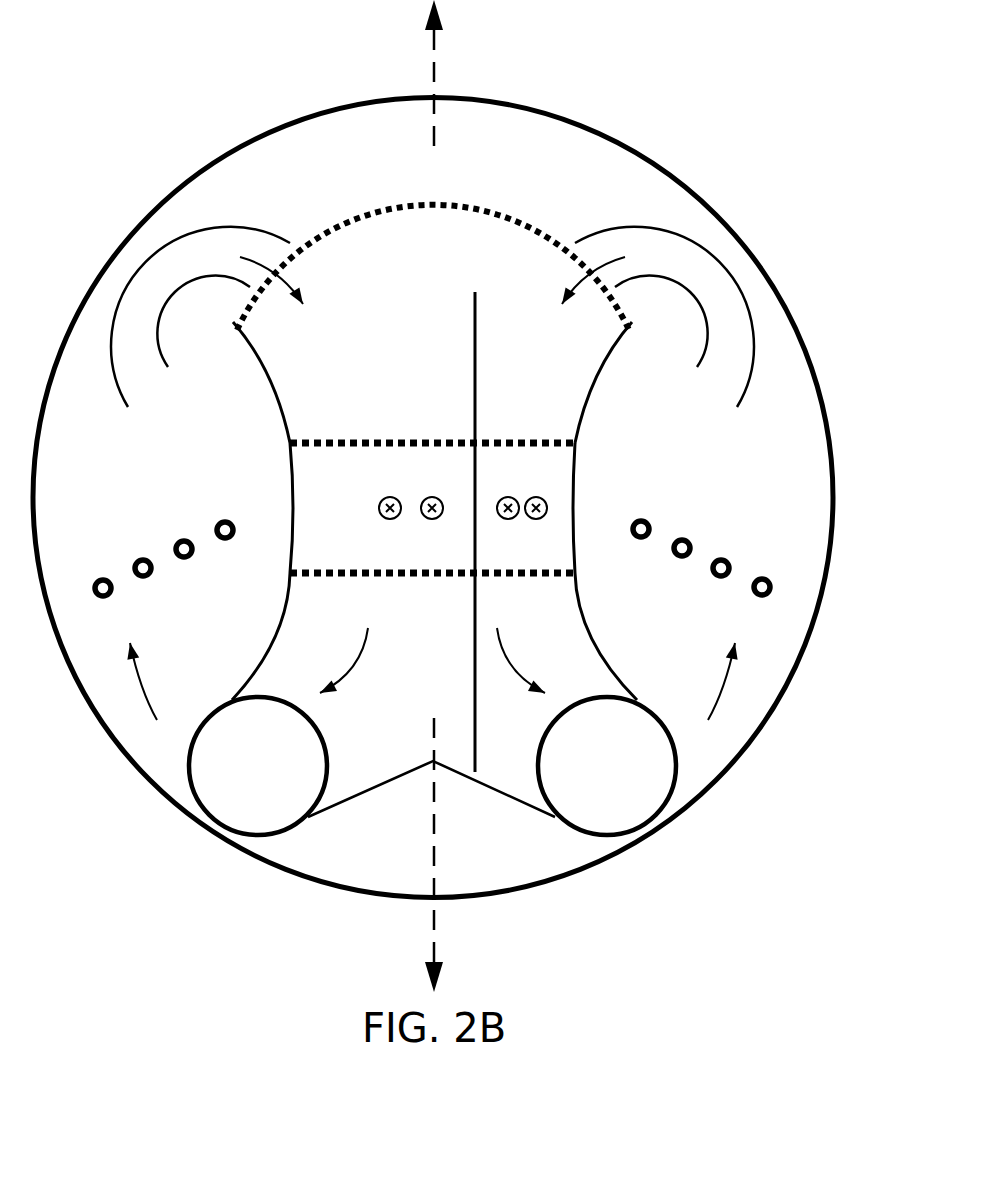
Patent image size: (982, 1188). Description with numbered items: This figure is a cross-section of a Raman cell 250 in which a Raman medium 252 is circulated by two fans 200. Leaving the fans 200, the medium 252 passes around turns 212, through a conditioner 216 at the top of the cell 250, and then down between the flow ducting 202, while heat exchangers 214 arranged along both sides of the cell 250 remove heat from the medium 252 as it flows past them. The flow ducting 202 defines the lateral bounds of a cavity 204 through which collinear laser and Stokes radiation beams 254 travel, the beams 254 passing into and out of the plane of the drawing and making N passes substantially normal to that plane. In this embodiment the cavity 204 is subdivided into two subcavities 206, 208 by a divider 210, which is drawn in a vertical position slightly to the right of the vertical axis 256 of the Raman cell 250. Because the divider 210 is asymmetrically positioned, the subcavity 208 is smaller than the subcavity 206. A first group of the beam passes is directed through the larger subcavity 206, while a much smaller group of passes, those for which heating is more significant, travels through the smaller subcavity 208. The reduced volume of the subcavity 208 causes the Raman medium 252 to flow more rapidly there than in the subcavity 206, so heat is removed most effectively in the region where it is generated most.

The fans 200 is at (282, 781).
The flow ducting 202 is at (277, 412).
The cavity 204 is at (522, 440).
The subcavity 206 is at (417, 553).
The subcavity 208 is at (577, 503).
The divider 210 is at (473, 325).
The turns 212 is at (112, 353).
The heat exchangers 214 is at (175, 532).
The conditioner 216 is at (443, 203).
The Raman cell 250 is at (686, 138).
The Raman medium 252 is at (262, 263).
The collinear laser and Stokes radiation beams 254 is at (436, 497).
The vertical axis 256 is at (435, 72).